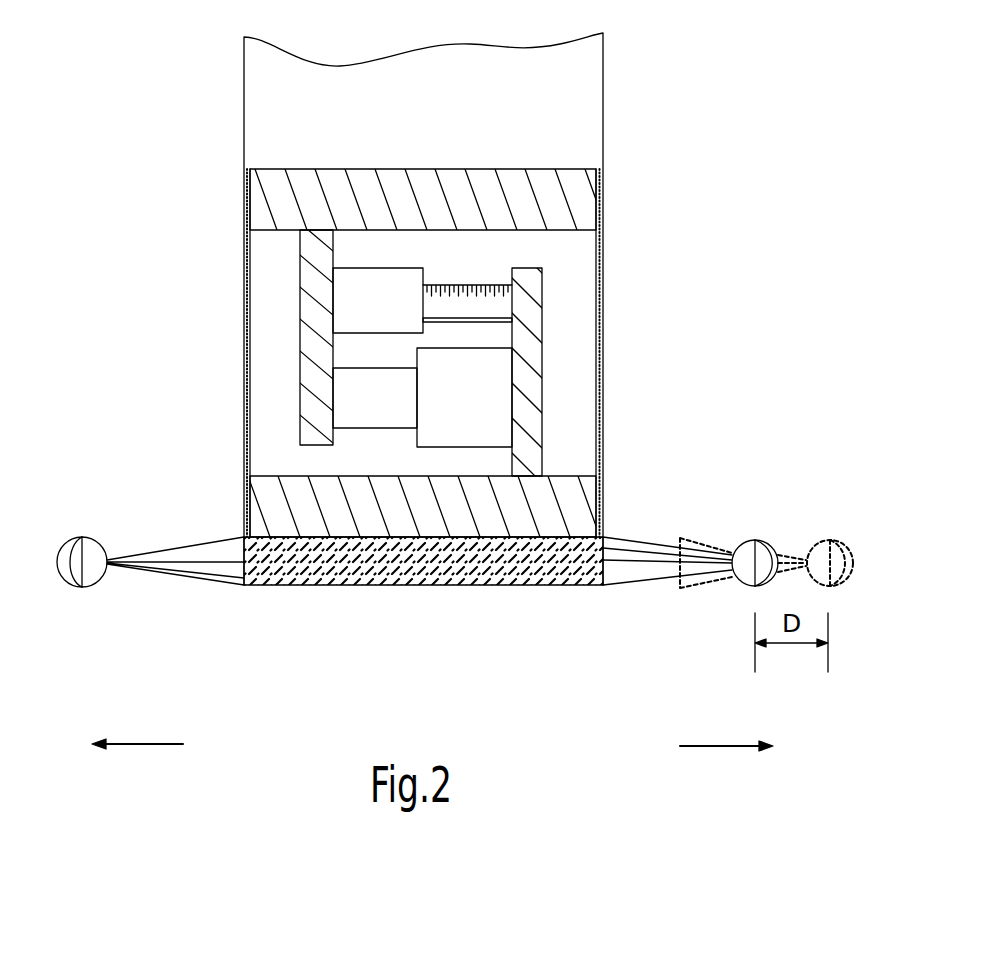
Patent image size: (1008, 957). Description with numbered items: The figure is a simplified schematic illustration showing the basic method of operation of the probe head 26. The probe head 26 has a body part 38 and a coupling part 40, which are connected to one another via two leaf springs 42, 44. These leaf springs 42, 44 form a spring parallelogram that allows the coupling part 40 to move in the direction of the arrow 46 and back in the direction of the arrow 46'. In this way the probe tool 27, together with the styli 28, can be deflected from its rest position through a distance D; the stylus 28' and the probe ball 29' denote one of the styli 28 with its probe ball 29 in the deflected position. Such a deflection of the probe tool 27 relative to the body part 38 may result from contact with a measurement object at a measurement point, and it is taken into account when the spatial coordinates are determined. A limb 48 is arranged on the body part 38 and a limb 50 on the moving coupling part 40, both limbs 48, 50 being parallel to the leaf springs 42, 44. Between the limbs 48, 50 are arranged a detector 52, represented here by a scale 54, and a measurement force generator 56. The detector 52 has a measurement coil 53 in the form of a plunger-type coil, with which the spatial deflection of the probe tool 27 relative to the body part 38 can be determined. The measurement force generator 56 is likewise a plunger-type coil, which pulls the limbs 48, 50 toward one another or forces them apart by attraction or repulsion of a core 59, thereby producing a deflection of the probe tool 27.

The probe head 26 is at (645, 254).
The probe tool 27 is at (390, 586).
The styli 28 is at (419, 607).
The stylus in deflected position 28' is at (743, 604).
The probe ball 29 is at (418, 554).
The probe ball in deflected position 29' is at (848, 532).
The body part 38 is at (371, 205).
The coupling part 40 is at (281, 501).
The leaf spring 42 is at (244, 360).
The leaf spring 44 is at (603, 385).
The arrow 46 is at (137, 792).
The arrow 46' is at (726, 788).
The limb 48 is at (310, 405).
The limb 50 is at (532, 358).
The detector 52 is at (452, 262).
The measurement coil 53 is at (368, 297).
The scale 54 is at (475, 282).
The measurement force generator 56 is at (472, 400).
The core 59 is at (362, 400).